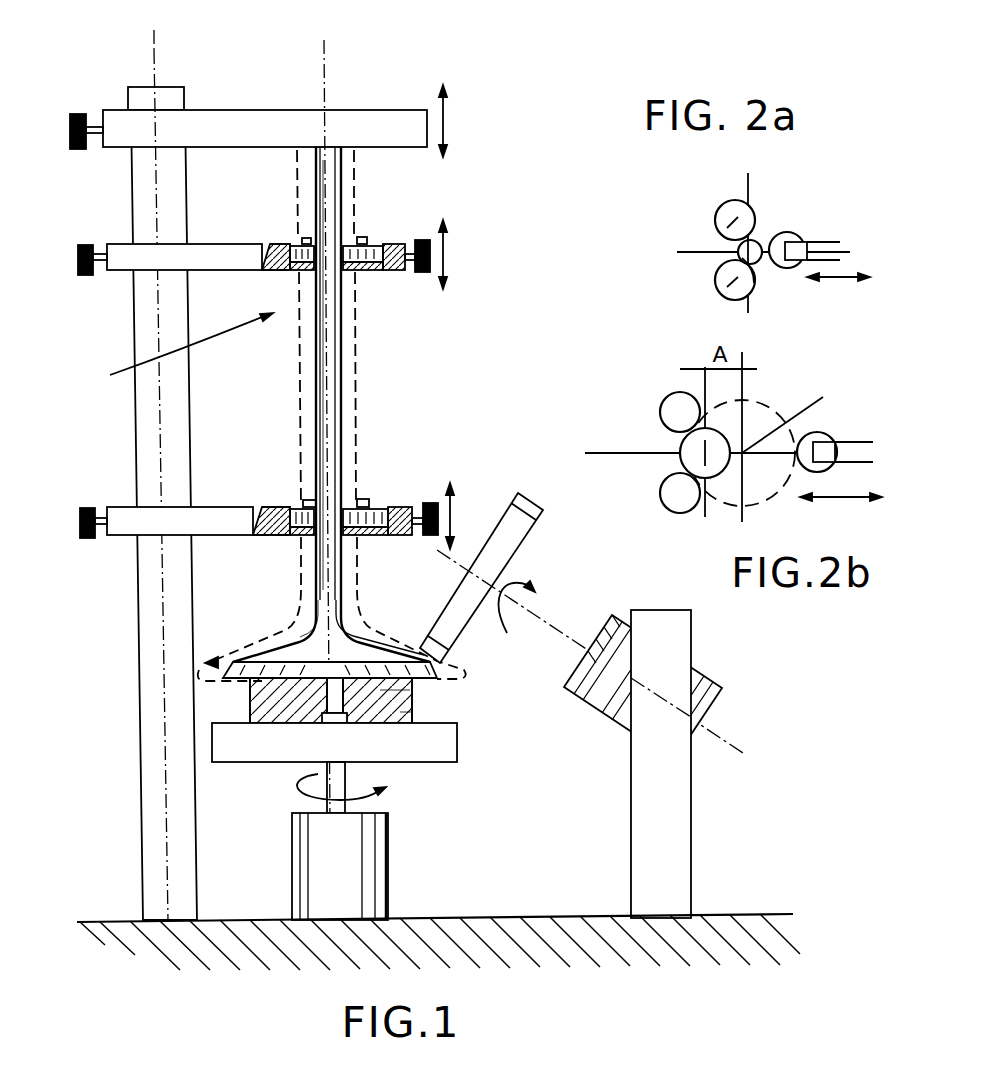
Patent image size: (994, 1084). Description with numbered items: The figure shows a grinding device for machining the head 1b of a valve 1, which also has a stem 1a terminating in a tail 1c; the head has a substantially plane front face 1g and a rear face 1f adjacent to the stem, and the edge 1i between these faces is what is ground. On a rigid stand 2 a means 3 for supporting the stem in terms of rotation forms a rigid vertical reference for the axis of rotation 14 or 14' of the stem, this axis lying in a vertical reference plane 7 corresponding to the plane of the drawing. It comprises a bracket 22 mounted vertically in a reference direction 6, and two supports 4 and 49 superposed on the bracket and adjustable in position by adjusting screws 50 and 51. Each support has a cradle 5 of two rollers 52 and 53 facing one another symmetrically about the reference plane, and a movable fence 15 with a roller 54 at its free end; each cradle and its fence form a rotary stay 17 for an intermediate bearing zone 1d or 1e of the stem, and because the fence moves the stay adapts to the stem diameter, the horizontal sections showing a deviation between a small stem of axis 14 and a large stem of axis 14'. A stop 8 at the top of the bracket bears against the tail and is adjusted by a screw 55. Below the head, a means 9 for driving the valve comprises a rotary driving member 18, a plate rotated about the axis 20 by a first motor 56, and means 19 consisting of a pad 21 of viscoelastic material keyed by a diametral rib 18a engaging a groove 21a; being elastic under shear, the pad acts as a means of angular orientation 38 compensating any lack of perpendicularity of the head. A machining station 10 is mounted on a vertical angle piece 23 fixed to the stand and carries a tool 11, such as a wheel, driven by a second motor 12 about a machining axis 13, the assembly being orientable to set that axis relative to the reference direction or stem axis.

In FIG. 1, the valve 1 is at (335, 347).
In FIG. 1, the stem 1a is at (337, 390).
In FIG. 1, the head 1b is at (287, 655).
In FIG. 1, the tail 1c is at (317, 163).
In FIG. 1, the intermediate bearing zone 1d is at (320, 246).
In FIG. 1, the intermediate bearing zone 1e is at (308, 494).
In FIG. 1, the rear face 1f is at (367, 650).
In FIG. 1, the front face 1g is at (400, 696).
In FIG. 1, the edge 1i is at (247, 683).
In FIG. 1, the rigid stand 2 is at (518, 920).
In FIG. 1, the means for supporting the stem in terms of rotation 3 is at (181, 351).
In FIG. 1, the support 4 is at (213, 252).
In FIG. 2a, the cradle 5 is at (745, 243).
In FIG. 2b, the cradle 5 is at (687, 458).
In FIG. 1, the reference direction 6 is at (154, 50).
In FIG. 2a, the vertical reference plane 7 is at (688, 256).
In FIG. 2b, the vertical reference plane 7 is at (615, 455).
In FIG. 1, the stop 8 is at (350, 118).
In FIG. 1, the means for driving the valve in rotation 9 is at (252, 696).
In FIG. 1, the machining station 10 is at (556, 602).
In FIG. 1, the tool 11 is at (442, 618).
In FIG. 1, the second motor 12 is at (605, 683).
In FIG. 1, the machining axis 13 is at (573, 638).
In FIG. 1, the axis of rotation 14 is at (299, 419).
In FIG. 2a, the axis of rotation 14 is at (764, 226).
In FIG. 2b, the axis of rotation 14 is at (658, 443).
In FIG. 2b, the axis of rotation 14' is at (797, 416).
In FIG. 2a, the movable fence 15 is at (818, 243).
In FIG. 2b, the movable fence 15 is at (843, 447).
In FIG. 2a, the rotary stay 17 is at (755, 275).
In FIG. 2b, the rotary stay 17 is at (728, 428).
In FIG. 1, the rotary driving member 18 is at (252, 750).
In FIG. 1, the diametral rib 18a is at (327, 703).
In FIG. 1, the means for adjusting 19 is at (292, 702).
In FIG. 1, the axis of rotation 20 is at (350, 778).
In FIG. 1, the pad 21 is at (408, 710).
In FIG. 1, the groove 21a is at (330, 724).
In FIG. 1, the bracket 22 is at (145, 212).
In FIG. 1, the vertical angle piece 23 is at (683, 791).
In FIG. 1, the means of angular orientation 38 is at (256, 713).
In FIG. 1, the support 49 is at (223, 517).
In FIG. 1, the adjusting screw 50 is at (80, 272).
In FIG. 1, the adjusting screw 51 is at (90, 540).
In FIG. 1, the roller 52 is at (290, 270).
In FIG. 2a, the roller 52 is at (732, 202).
In FIG. 2b, the roller 52 is at (672, 407).
In FIG. 2a, the roller 53 is at (715, 287).
In FIG. 2b, the roller 53 is at (673, 503).
In FIG. 1, the roller 54 is at (373, 247).
In FIG. 2a, the roller 54 is at (780, 235).
In FIG. 2b, the roller 54 is at (807, 458).
In FIG. 1, the screw 55 is at (77, 112).
In FIG. 1, the first motor 56 is at (360, 892).